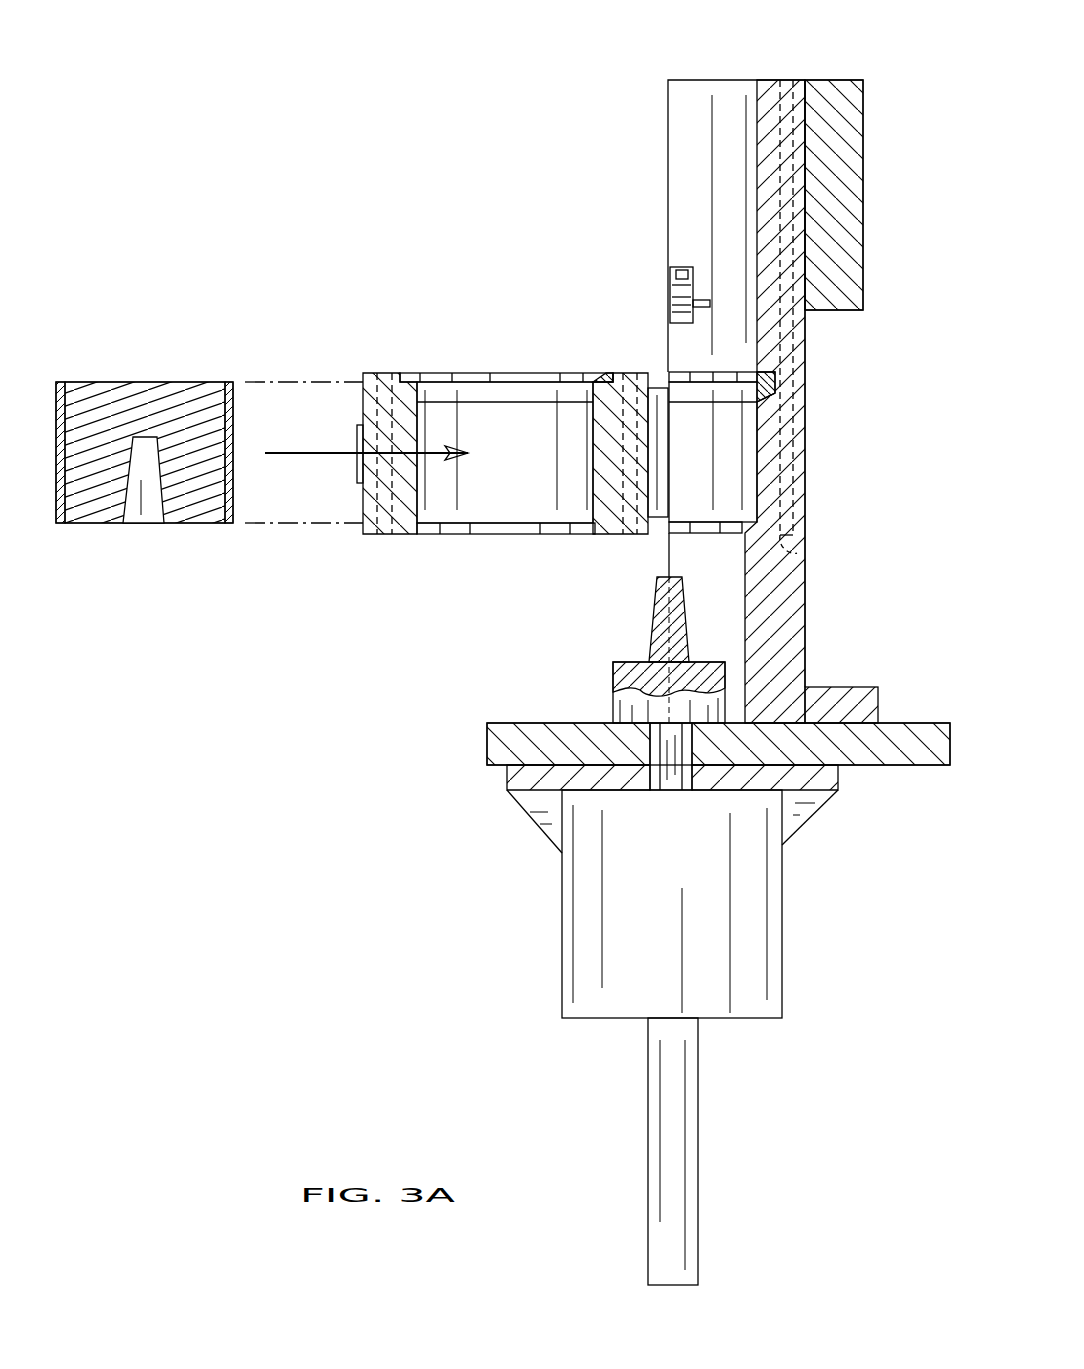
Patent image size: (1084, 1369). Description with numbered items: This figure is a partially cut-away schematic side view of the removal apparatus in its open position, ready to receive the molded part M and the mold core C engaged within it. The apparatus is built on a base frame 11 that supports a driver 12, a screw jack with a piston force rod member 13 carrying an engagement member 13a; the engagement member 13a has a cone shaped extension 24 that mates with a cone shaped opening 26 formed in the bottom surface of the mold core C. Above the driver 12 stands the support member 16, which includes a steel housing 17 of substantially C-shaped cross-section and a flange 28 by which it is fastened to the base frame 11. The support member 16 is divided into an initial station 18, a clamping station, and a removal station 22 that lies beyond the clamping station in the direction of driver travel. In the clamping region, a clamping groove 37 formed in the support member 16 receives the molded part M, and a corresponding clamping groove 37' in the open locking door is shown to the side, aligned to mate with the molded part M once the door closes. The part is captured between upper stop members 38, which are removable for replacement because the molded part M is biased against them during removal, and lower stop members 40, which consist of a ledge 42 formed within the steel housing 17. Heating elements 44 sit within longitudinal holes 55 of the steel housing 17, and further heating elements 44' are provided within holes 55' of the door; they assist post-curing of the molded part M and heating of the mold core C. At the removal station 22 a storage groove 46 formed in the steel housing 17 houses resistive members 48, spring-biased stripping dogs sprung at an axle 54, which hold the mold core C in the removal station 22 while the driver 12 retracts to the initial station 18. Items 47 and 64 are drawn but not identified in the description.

The base frame 11 is at (498, 771).
The driver 12 is at (760, 903).
The piston force rod member 13 is at (667, 790).
The engagement member 13a is at (613, 703).
The support member 16 is at (810, 445).
The steel housing 17 is at (812, 555).
The initial station 18 is at (546, 633).
The removal station 22 is at (646, 158).
The cone shaped extension 24 is at (657, 610).
The cone shaped opening 26 is at (140, 490).
The flange 28 is at (852, 693).
The clamping groove 37 is at (766, 450).
The clamping groove 37' is at (420, 485).
The upper stop members 38 is at (402, 373).
The lower stop members 40 is at (437, 534).
The ledge 42 is at (590, 534).
The heating elements 44 is at (804, 269).
The heating elements 44' is at (363, 422).
The storage groove 46 is at (757, 153).
The wall 47 is at (815, 247).
The resistive members 48 is at (666, 280).
The axle 54 is at (703, 300).
The longitudinal holes 55 is at (819, 211).
The holes 55' is at (621, 344).
The block 64 is at (835, 298).
The mold core C is at (145, 382).
The molded part M is at (228, 523).